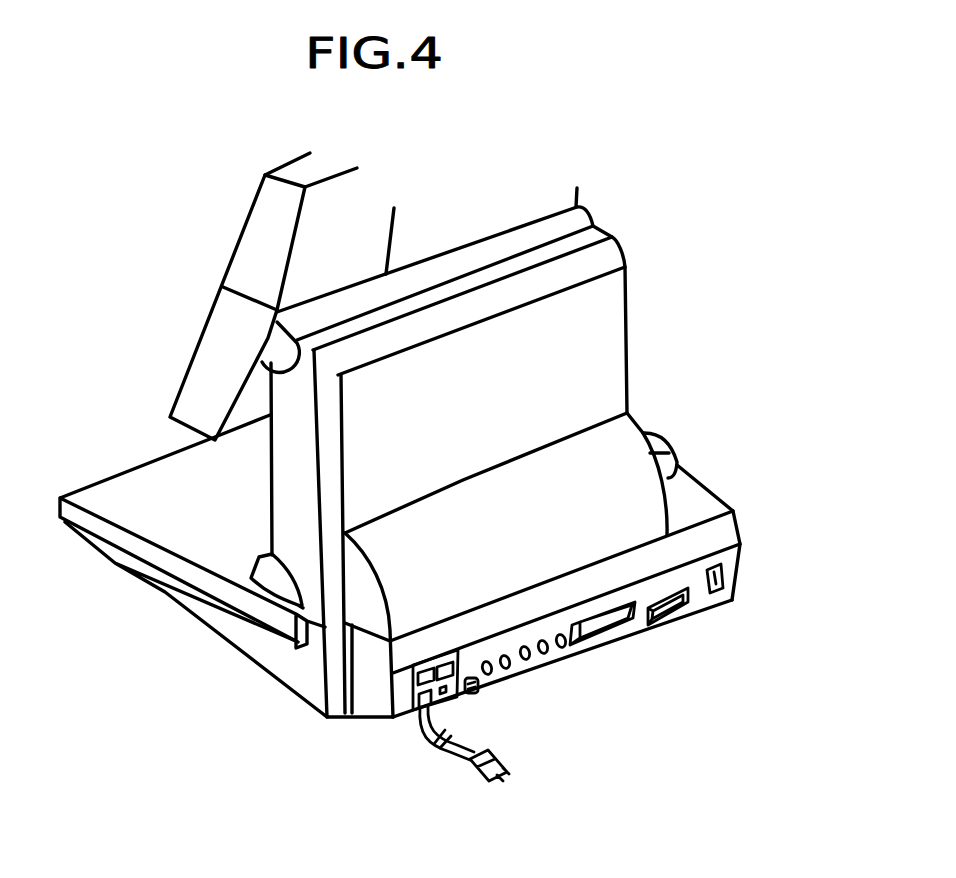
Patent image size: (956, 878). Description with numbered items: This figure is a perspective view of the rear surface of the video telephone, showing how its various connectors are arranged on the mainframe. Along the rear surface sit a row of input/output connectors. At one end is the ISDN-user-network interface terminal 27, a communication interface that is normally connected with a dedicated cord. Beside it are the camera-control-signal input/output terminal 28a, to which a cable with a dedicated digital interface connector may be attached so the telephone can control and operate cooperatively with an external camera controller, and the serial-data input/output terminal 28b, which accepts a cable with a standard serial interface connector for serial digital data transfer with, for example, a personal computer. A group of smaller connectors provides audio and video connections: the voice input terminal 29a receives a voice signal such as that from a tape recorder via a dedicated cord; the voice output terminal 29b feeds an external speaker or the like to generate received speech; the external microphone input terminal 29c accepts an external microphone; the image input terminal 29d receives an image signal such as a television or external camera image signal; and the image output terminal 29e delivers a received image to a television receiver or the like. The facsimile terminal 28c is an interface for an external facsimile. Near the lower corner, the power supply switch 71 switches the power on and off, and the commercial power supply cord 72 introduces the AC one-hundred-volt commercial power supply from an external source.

The ISDN-user-network interface terminal 27 is at (722, 582).
The camera-control-signal input/output terminal 28a is at (688, 602).
The serial-data input/output terminal 28b is at (618, 637).
The facsimile terminal 28c is at (471, 688).
The voice input terminal 29a is at (490, 675).
The voice output terminal 29b is at (508, 668).
The external microphone input terminal 29c is at (528, 660).
The image input terminal 29d is at (547, 654).
The image output terminal 29e is at (564, 647).
The power supply switch 71 is at (395, 714).
The commercial power supply cord 72 is at (466, 760).